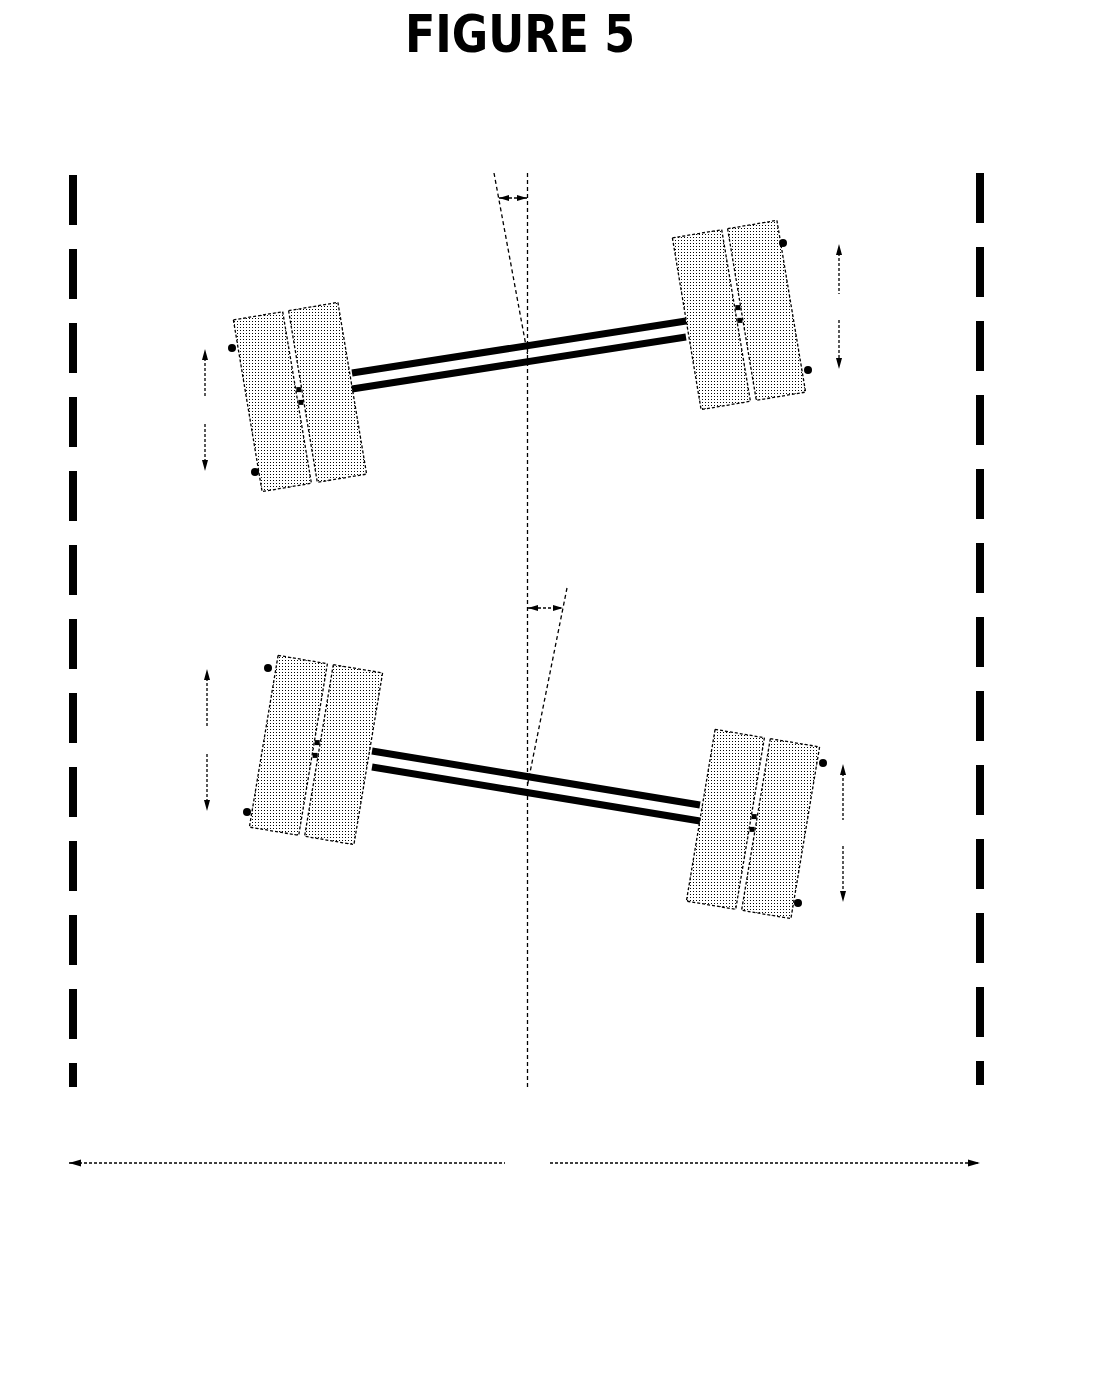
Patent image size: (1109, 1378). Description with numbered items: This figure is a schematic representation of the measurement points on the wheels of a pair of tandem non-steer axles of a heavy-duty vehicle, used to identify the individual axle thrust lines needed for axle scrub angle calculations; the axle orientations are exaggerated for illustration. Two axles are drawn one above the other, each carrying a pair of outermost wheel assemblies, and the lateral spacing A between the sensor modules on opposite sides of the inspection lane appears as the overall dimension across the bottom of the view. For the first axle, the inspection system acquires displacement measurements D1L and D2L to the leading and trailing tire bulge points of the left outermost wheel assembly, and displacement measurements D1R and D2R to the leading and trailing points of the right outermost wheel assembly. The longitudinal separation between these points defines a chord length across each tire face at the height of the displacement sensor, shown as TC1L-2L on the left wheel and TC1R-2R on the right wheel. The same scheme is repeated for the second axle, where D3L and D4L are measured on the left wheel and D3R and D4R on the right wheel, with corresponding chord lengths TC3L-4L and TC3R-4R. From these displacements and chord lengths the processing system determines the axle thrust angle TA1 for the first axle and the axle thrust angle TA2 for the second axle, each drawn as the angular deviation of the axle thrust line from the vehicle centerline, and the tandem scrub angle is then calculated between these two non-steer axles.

The displacement measurement to leading point of left outermost wheel assembly of fi D1L is at (232, 348).
The displacement measurement to trailing point of left outermost wheel assembly of f D2L is at (255, 472).
The displacement measurement to leading point of right outermost wheel assembly of f D1R is at (980, 243).
The displacement measurement to trailing point of right outermost wheel assembly of D2R is at (980, 370).
The displacement measurement to leading point of left outermost wheel assembly of se D3L is at (268, 668).
The displacement measurement to trailing point of left outermost wheel assembly of s D4L is at (247, 812).
The displacement measurement to leading point of right outermost wheel assembly of s D3R is at (980, 763).
The displacement measurement to trailing point of right outermost wheel assembly of D4R is at (980, 903).
The longitudinal separation between leading and trailing points on left outermost wh TC1L-2L is at (205, 410).
The longitudinal separation between leading and trailing points on right outermost w TC1R-2R is at (838, 306).
The longitudinal separation between leading and trailing points on left outermost wh TC3L-4L is at (208, 740).
The longitudinal separation between leading and trailing points on right outermost w TC3R-4R is at (840, 833).
The axle thrust angle for first non-steer axle TA1 is at (510, 246).
The axle thrust angle for second non-steer axle TA2 is at (548, 667).
The lateral spacing between sensor modules A is at (524, 1164).